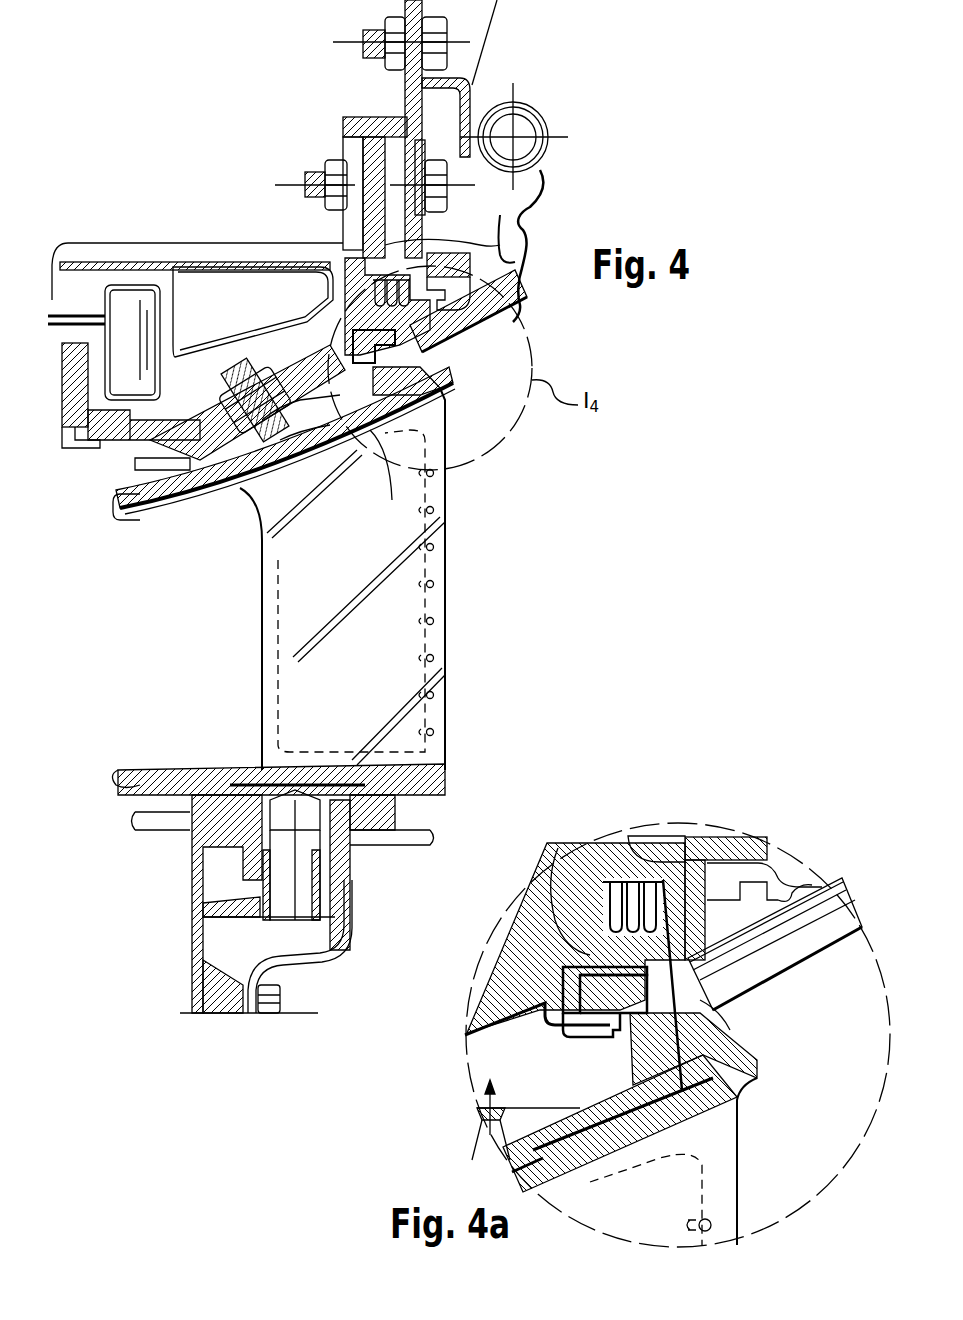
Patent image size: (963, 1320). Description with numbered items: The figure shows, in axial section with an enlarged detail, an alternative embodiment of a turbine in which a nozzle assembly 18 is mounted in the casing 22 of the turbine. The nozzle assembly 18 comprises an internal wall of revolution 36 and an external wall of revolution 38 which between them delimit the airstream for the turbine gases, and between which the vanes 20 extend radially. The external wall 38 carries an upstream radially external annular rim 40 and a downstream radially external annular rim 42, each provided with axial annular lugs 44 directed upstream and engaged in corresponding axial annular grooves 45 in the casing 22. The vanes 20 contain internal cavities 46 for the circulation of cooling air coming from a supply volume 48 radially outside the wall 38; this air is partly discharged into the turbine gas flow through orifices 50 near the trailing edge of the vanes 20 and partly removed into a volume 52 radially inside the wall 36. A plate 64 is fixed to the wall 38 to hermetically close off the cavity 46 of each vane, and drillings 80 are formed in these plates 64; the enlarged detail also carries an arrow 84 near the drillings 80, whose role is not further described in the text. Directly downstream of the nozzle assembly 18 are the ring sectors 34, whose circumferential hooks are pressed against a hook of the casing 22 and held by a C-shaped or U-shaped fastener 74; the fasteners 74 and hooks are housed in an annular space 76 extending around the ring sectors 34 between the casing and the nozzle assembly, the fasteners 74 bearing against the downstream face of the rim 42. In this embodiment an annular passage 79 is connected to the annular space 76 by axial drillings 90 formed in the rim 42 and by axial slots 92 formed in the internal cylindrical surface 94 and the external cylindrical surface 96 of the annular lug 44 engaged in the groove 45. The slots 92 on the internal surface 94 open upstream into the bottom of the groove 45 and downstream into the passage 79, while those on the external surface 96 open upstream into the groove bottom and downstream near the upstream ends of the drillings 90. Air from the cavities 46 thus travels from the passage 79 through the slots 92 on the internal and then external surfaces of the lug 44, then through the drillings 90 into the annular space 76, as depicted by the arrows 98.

In FIG. 4, the nozzle assembly 18 is at (338, 579).
In FIG. 4A, the nozzle assembly 18 is at (715, 1161).
In FIG. 4, the vanes 20 is at (270, 722).
In FIG. 4A, the vanes 20 is at (738, 1140).
In FIG. 4, the casing 22 is at (520, 210).
In FIG. 4A, the casing 22 is at (560, 915).
In FIG. 4, the ring sectors 34 is at (522, 328).
In FIG. 4A, the ring sectors 34 is at (848, 930).
In FIG. 4, the internal wall of revolution 36 is at (160, 762).
In FIG. 4, the external wall of revolution 38 is at (168, 528).
In FIG. 4A, the external wall of revolution 38 is at (752, 1073).
In FIG. 4, the upstream radially external annular rim 40 is at (218, 505).
In FIG. 4, the downstream radially external annular rim 42 is at (440, 412).
In FIG. 4A, the downstream radially external annular rim 42 is at (690, 1040).
In FIG. 4, the axial annular lugs 44 is at (440, 372).
In FIG. 4A, the axial annular lugs 44 is at (575, 985).
In FIG. 4, the axial annular grooves 45 is at (135, 458).
In FIG. 4A, the axial annular grooves 45 is at (560, 970).
In FIG. 4, the internal cavities 46 is at (288, 560).
In FIG. 4A, the internal cavities 46 is at (683, 1185).
In FIG. 4, the supply volume 48 is at (253, 312).
In FIG. 4, the orifices 50 is at (434, 622).
In FIG. 4A, the orifices 50 is at (710, 1226).
In FIG. 4, the internal volume 52 is at (230, 950).
In FIG. 4, the plate 64 is at (330, 430).
In FIG. 4A, the plate 64 is at (478, 1117).
In FIG. 4A, the fastener 74 is at (718, 847).
In FIG. 4A, the annular space 76 is at (720, 955).
In FIG. 4A, the annular passage 79 is at (528, 1072).
In FIG. 4A, the drillings 80 is at (488, 1130).
In FIG. 4A, the flow arrow 84 is at (478, 1108).
In FIG. 4A, the axial drillings 90 is at (700, 1010).
In FIG. 4A, the axial slots 92 is at (605, 1040).
In FIG. 4A, the internal cylindrical surface 94 is at (500, 1015).
In FIG. 4A, the external cylindrical surface 96 is at (565, 910).
In FIG. 4A, the arrows 98 is at (740, 985).